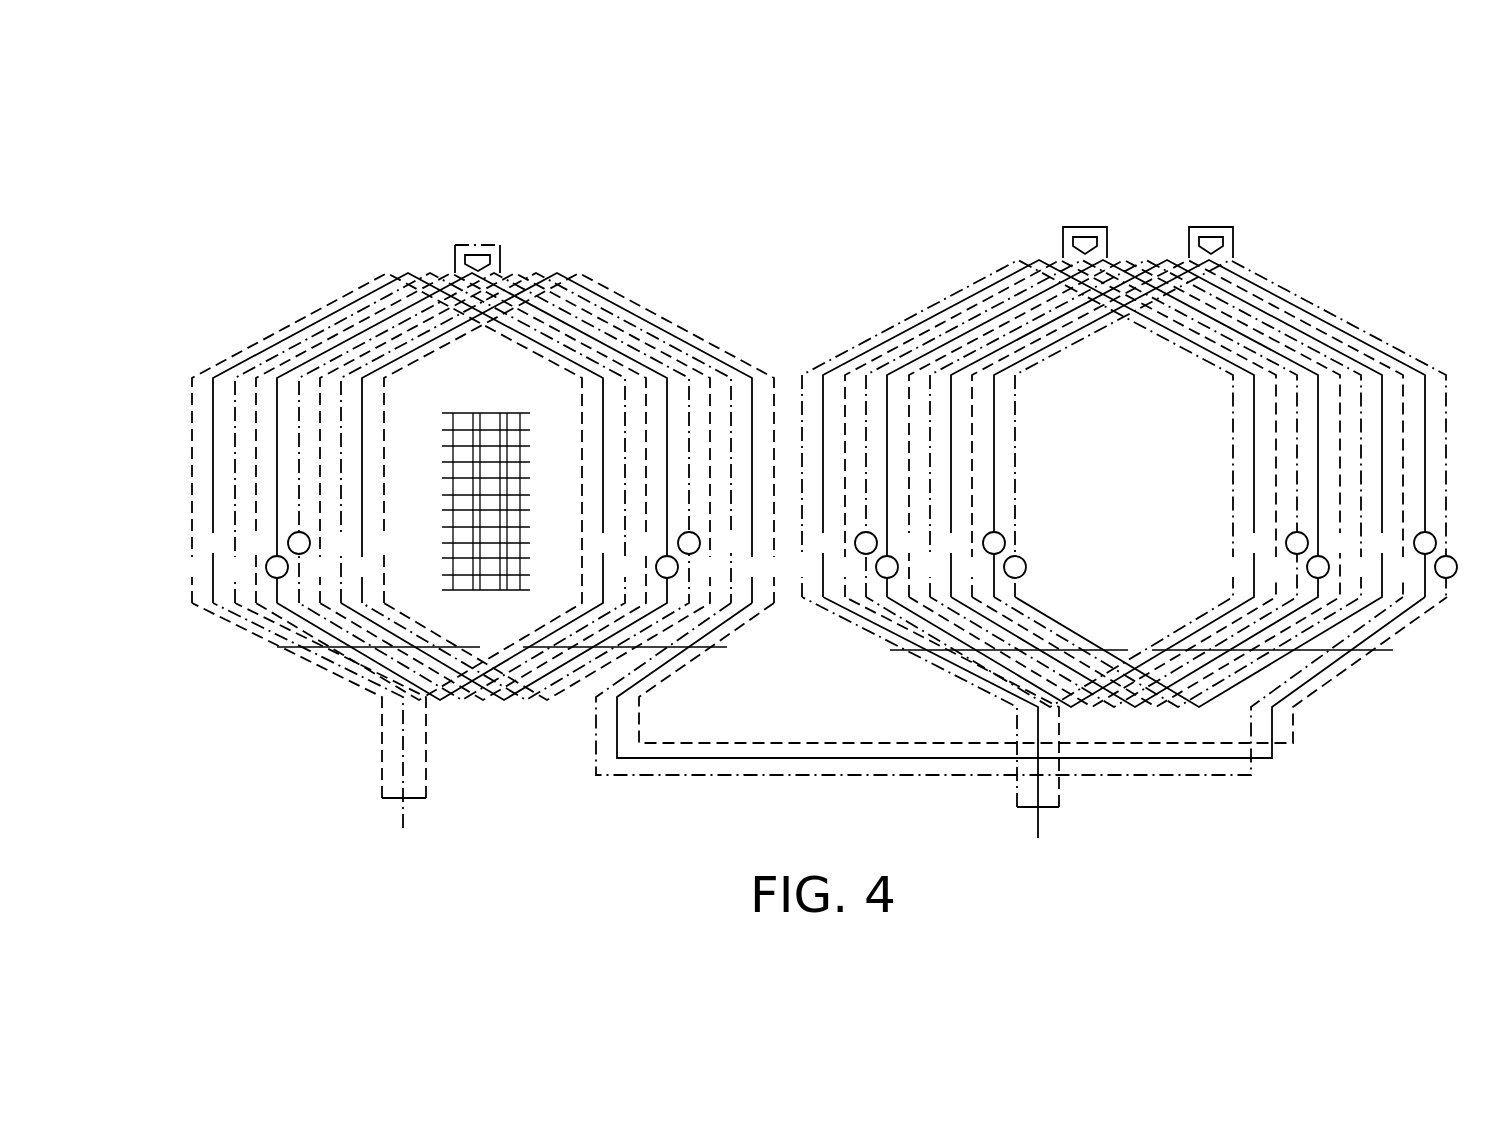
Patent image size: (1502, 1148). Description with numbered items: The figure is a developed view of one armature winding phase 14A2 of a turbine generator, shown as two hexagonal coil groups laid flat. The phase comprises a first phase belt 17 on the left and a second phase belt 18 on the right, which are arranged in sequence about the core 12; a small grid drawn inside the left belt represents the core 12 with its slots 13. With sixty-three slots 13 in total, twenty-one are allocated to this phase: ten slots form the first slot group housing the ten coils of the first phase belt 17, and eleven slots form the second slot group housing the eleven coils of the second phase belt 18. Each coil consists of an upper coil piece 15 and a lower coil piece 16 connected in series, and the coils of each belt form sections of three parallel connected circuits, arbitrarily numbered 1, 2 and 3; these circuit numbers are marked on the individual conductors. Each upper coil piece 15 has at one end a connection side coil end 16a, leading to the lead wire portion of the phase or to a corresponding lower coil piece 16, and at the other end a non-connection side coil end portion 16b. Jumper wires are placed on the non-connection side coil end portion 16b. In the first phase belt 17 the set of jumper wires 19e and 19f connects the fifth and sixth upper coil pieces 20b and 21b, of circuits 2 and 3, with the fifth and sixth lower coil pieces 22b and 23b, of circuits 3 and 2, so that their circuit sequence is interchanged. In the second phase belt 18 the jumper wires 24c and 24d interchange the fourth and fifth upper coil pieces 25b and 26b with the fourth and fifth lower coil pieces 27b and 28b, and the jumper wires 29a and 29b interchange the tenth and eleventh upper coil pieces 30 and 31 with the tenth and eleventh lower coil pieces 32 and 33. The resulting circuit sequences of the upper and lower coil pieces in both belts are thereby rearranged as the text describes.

The armature winding phase 14A2 is at (822, 360).
The first phase belt 17 is at (243, 346).
The second phase belt 18 is at (1416, 351).
The core 12 is at (467, 412).
The slots 13 is at (498, 453).
The upper coil piece 15 is at (380, 648).
The lower coil piece 16 is at (627, 647).
The connection side coil end 16a is at (376, 761).
The non-connection side coil end portion 16b is at (448, 253).
The jumper wire 19e is at (498, 258).
The jumper wire 19f is at (480, 242).
The fifth upper coil piece 20b is at (318, 355).
The sixth upper coil piece 21b is at (370, 335).
The fifth lower coil piece 22b is at (605, 318).
The sixth lower coil piece 23b is at (627, 345).
The jumper wire 24c is at (1088, 232).
The jumper wire 24d is at (1075, 228).
The fourth upper coil piece 25b is at (868, 340).
The fifth upper coil piece 26b is at (930, 360).
The fourth lower coil piece 27b is at (1270, 293).
The fifth lower coil piece 28b is at (1312, 292).
The jumper wire 29a is at (1210, 228).
The jumper wire 29b is at (1228, 242).
The tenth upper coil piece 30 is at (1000, 360).
The eleventh upper coil piece 31 is at (1035, 360).
The tenth lower coil piece 32 is at (1340, 308).
The eleventh lower coil piece 33 is at (1390, 342).
The circuit number 1 is at (797, 555).
The circuit number 2 is at (831, 555).
The circuit number 3 is at (832, 555).